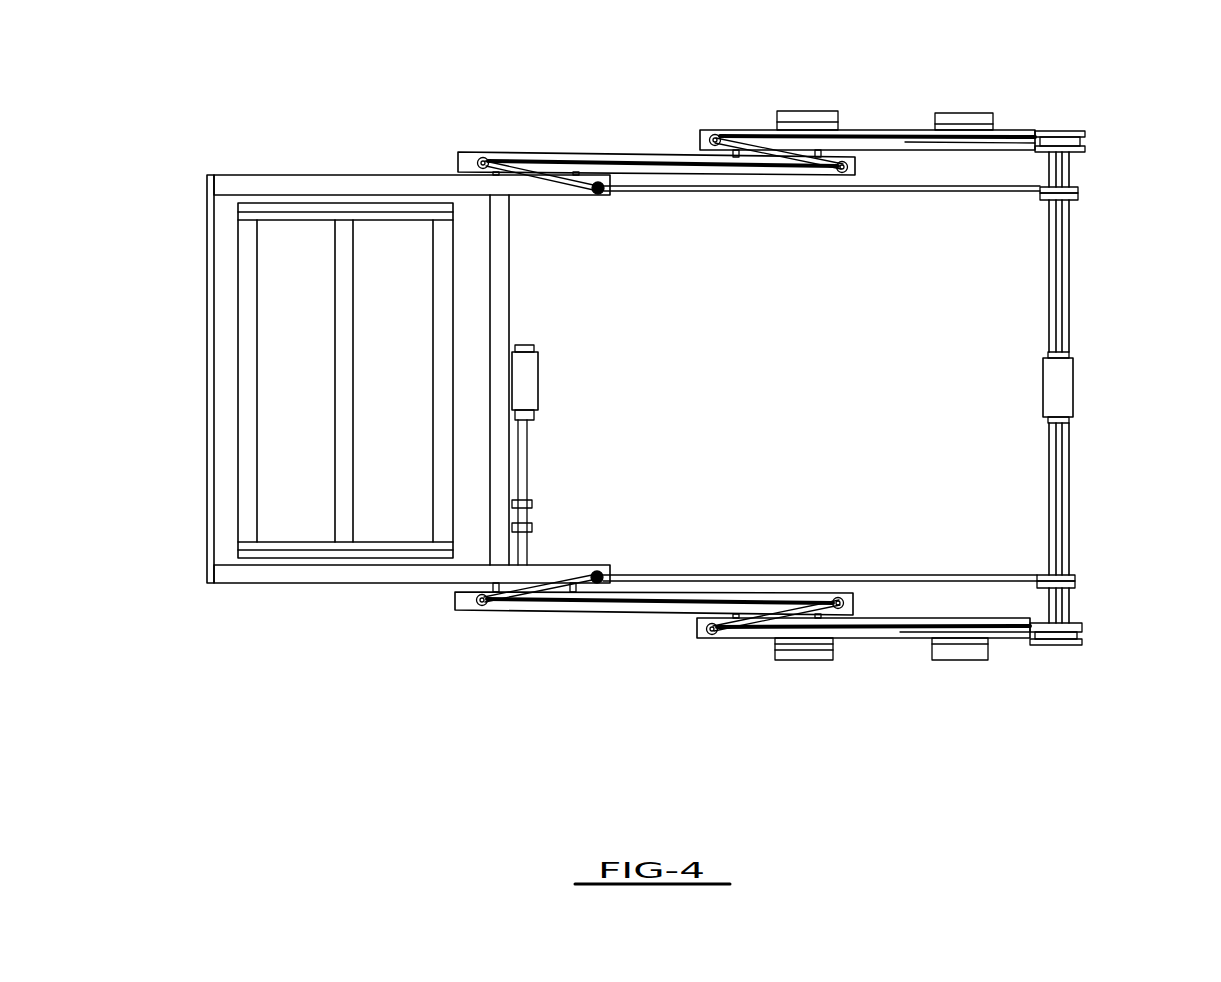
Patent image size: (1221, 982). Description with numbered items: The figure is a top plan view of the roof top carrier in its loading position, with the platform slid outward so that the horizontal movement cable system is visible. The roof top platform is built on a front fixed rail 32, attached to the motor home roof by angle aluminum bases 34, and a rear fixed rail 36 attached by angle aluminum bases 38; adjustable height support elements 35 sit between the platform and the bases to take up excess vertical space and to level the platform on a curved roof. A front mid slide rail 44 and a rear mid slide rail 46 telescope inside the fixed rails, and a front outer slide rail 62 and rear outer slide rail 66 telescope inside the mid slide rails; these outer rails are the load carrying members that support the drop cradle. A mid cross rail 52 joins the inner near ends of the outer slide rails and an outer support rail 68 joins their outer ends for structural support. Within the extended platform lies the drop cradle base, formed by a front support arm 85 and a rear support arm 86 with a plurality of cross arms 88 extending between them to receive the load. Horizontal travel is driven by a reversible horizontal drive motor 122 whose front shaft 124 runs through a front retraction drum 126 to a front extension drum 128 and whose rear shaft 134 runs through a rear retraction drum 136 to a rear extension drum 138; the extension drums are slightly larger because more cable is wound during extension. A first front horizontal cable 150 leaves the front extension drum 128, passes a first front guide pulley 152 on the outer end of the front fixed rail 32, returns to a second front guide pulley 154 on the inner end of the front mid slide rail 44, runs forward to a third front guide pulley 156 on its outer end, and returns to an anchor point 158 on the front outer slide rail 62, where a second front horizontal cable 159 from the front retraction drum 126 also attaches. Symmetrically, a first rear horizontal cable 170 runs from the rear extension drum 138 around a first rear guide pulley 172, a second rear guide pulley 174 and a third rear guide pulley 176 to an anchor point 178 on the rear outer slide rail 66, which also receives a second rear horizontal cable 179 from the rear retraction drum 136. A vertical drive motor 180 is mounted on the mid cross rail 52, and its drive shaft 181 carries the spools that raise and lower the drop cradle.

The front fixed rail 32 is at (1000, 625).
The angle aluminum bases 34 is at (817, 653).
The adjustable height support elements 35 is at (786, 647).
The rear fixed rail 36 is at (912, 145).
The angle aluminum bases 38 is at (807, 115).
The front mid slide rail 44 is at (625, 607).
The rear mid slide rail 46 is at (653, 152).
The mid cross rail 52 is at (502, 302).
The front outer slide rail 62 is at (303, 575).
The rear outer slide rail 66 is at (365, 183).
The outer support rail 68 is at (219, 364).
The panel stile 85 is at (385, 547).
The rear support arm 86 is at (395, 218).
The cross arms 88 is at (248, 347).
The reversible horizontal drive motor 122 is at (1066, 389).
The front shaft 124 is at (1058, 466).
The front retraction drum 126 is at (1078, 578).
The front extension drum 128 is at (1082, 641).
The rear shaft 134 is at (1058, 325).
The rear retraction drum 136 is at (1080, 198).
The rear extension drum 138 is at (1085, 133).
The first front horizontal cable 150 is at (888, 633).
The first front guide pulley 152 is at (706, 635).
The second front guide pulley 154 is at (839, 597).
The third front guide pulley 156 is at (478, 612).
The anchor point 158 is at (599, 575).
The second front horizontal cable 159 is at (965, 575).
The first rear horizontal cable 170 is at (886, 135).
The first rear guide pulley 172 is at (712, 128).
The second rear guide pulley 174 is at (840, 173).
The third rear guide pulley 176 is at (480, 157).
The anchor point 178 is at (600, 197).
The second rear horizontal cable 179 is at (733, 193).
The vertical drive motor 180 is at (528, 383).
The drive shaft 181 is at (525, 458).